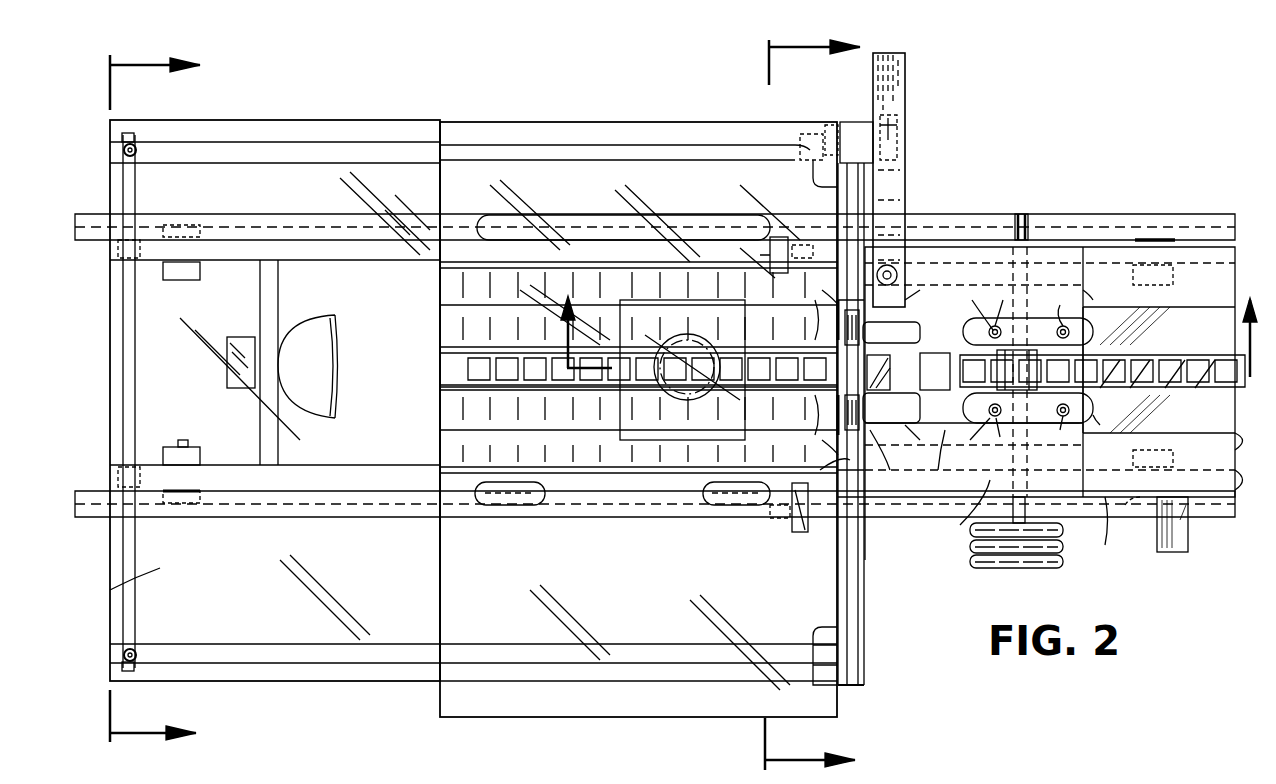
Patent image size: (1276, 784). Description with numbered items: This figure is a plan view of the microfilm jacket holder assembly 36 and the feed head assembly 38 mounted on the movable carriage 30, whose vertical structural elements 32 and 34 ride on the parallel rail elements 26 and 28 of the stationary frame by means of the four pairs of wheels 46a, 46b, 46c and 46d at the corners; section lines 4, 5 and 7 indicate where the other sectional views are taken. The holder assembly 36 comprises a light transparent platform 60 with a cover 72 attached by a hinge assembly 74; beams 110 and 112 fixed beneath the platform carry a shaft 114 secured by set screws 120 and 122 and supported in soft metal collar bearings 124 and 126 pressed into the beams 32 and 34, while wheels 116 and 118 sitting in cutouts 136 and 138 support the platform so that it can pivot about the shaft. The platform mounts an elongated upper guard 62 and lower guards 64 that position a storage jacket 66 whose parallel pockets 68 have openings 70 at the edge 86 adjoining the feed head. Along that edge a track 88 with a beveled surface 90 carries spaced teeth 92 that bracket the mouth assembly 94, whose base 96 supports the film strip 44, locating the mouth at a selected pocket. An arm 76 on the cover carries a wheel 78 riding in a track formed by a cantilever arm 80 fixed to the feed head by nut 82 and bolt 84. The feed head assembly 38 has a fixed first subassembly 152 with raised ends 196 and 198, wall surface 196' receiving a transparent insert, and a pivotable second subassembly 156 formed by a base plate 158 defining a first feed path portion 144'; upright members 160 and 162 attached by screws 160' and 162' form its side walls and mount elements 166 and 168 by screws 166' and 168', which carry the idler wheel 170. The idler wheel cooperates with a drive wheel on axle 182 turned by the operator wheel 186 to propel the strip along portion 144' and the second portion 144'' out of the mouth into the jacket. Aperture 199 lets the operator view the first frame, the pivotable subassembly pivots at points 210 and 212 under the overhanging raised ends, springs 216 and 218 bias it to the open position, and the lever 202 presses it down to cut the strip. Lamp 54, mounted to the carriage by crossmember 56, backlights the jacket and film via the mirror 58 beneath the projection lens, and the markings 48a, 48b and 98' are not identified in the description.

The section line 4- 4 is at (161, 400).
The section line 5- 5 is at (818, 407).
The section line 7- 7 is at (906, 325).
The rail element 26 is at (82, 225).
The rail element 28 is at (82, 505).
The carriage 30 is at (876, 522).
The vertical structural element 32 is at (332, 258).
The vertical structural element 34 is at (375, 468).
The jacket holder assembly 36 is at (358, 110).
The feed head assembly 38 is at (1008, 178).
The microfilm strip 44 is at (1215, 398).
The wheel pair 46a is at (200, 275).
The wheel pair 46b is at (200, 460).
The wheel pair 46c is at (1140, 238).
The wheel pair 46d is at (1130, 512).
The sensor 48a is at (185, 300).
The sensor 48b is at (180, 440).
The lamp 54 is at (330, 400).
The crossmember 56 is at (278, 290).
The mirror 58 is at (650, 315).
The platform 60 is at (121, 590).
The upper guard 62 is at (612, 220).
The lower guard 64 is at (505, 508).
The microfilm storage jacket 66 is at (420, 360).
The pocket 68 is at (445, 298).
The opening 70 is at (822, 367).
The cover 72 is at (440, 708).
The hinge assembly 74 is at (480, 130).
The arm 76 is at (860, 125).
The wheel 78 is at (910, 128).
The cantilever arm 80 is at (895, 90).
The nut 82 is at (897, 262).
The bolt 84 is at (893, 276).
The platform edge 86 is at (858, 652).
The track 88 is at (845, 688).
The beveled surface 90 is at (858, 598).
The teeth 92 is at (850, 415).
The mouth assembly 94 is at (845, 418).
The base 96 is at (845, 325).
The lower slide 98' is at (891, 408).
The beam 110 is at (272, 130).
The beam 112 is at (195, 645).
The shaft 114 is at (135, 190).
The wheel 116 is at (785, 237).
The wheel 118 is at (805, 532).
The set screw 120 is at (132, 150).
The set screw 122 is at (132, 660).
The collar bearing 124 is at (118, 254).
The collar bearing 126 is at (118, 478).
The cutout 136 is at (765, 237).
The cutout 138 is at (780, 523).
The first linear feed path portion 144' is at (957, 461).
The second linear feed path portion 144'' is at (896, 461).
The first subassembly 152 is at (1235, 483).
The second subassembly 156 is at (1235, 443).
The base plate 158 is at (1160, 347).
The upright member 160 is at (1049, 326).
The screw 160' is at (1061, 304).
The upright member 162 is at (1049, 407).
The screw 162' is at (1059, 436).
The structural element 166 is at (996, 302).
The screw 166' is at (968, 304).
The structural element 168 is at (964, 438).
The screw 168' is at (996, 438).
The idler wheel 170 is at (1017, 370).
The axle 182 is at (1025, 510).
The operator wheel 186 is at (1030, 560).
The raised end 196 is at (1051, 218).
The wall surface 196' is at (891, 331).
The raised end 198 is at (1026, 526).
The first aperture 199 is at (936, 385).
The lever 202 is at (1170, 555).
The pivot point 210 is at (1085, 298).
The pivot point 212 is at (1114, 423).
The spring 216 is at (923, 293).
The spring 218 is at (916, 442).